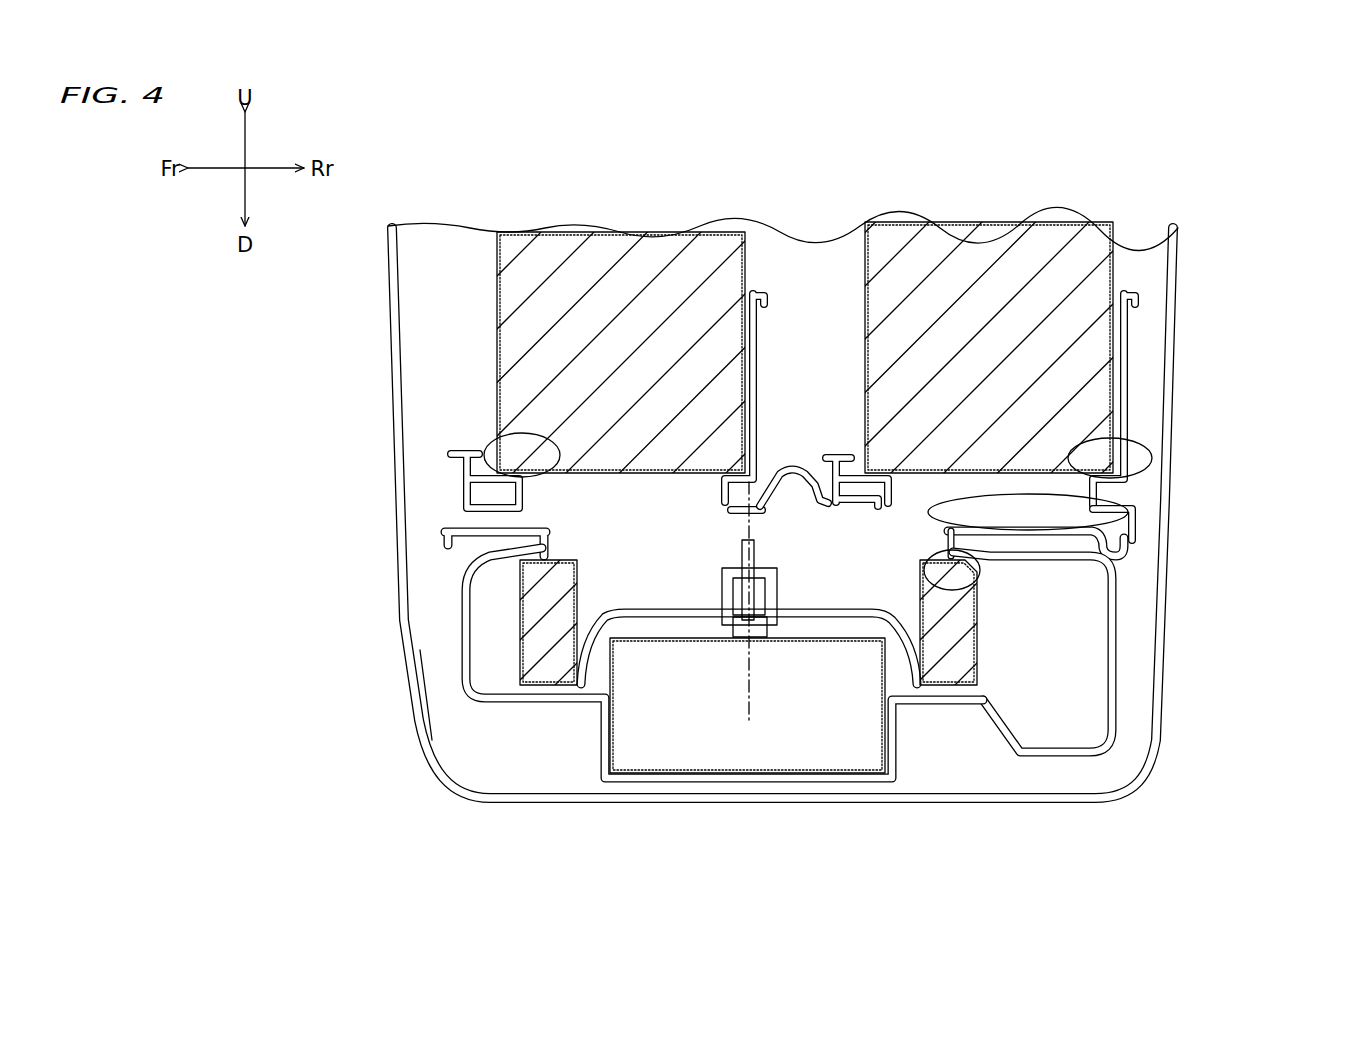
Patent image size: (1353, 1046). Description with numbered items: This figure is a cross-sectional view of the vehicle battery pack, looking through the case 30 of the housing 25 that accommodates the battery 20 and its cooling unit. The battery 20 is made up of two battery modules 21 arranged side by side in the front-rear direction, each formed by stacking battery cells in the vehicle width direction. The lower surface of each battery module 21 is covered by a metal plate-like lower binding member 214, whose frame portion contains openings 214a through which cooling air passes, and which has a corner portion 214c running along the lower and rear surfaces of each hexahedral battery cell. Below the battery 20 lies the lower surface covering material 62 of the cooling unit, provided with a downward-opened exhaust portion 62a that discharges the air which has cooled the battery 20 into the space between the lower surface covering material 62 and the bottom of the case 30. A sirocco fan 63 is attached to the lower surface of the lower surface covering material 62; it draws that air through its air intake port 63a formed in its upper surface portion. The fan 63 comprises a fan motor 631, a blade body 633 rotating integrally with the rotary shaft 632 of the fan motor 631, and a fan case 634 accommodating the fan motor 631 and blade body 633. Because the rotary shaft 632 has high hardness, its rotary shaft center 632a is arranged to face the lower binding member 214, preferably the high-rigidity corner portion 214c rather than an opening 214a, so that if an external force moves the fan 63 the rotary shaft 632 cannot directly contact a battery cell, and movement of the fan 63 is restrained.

The battery 20 is at (531, 228).
The battery module 21 is at (655, 305).
The lower binding member 214 is at (490, 489).
The opening 214a is at (484, 442).
The corner portion 214c is at (790, 470).
The case 30 is at (1180, 332).
The housing 25 is at (420, 770).
The lower surface covering material 62 is at (1135, 527).
The exhaust portion 62a is at (1100, 495).
The fan 63 is at (858, 694).
The fan motor 631 is at (678, 725).
The rotary shaft 632 is at (745, 550).
The rotary shaft center 632a is at (752, 676).
The blade body 633 is at (520, 650).
The air intake port 63a is at (980, 580).
The fan case 634 is at (1122, 702).